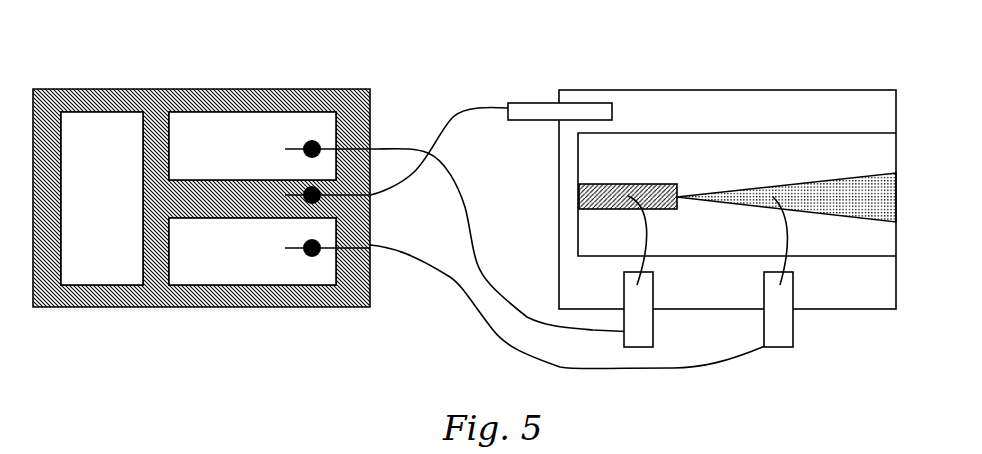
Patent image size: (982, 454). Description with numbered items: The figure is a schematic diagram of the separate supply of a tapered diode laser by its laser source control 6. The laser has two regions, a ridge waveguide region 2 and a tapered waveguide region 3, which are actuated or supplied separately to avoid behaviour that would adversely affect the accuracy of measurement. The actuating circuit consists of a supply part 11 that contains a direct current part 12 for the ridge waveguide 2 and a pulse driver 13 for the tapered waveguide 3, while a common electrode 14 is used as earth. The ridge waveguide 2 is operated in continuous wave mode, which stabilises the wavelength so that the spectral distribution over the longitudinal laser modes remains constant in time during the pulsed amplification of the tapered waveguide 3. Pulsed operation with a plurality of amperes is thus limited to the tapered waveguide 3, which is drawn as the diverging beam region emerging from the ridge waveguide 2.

The laser source control 6 is at (172, 293).
The supply part 11 is at (96, 132).
The direct current part 12 is at (233, 130).
The pulse driver 13 is at (229, 263).
The common electrode 14 is at (312, 195).
The ridge waveguide region 2 is at (622, 182).
The tapered waveguide region 3 is at (870, 185).